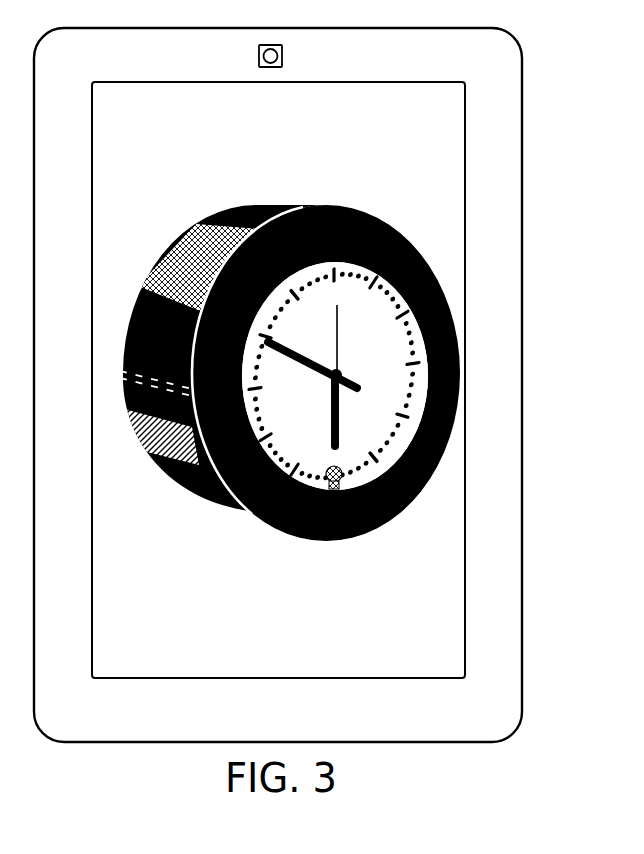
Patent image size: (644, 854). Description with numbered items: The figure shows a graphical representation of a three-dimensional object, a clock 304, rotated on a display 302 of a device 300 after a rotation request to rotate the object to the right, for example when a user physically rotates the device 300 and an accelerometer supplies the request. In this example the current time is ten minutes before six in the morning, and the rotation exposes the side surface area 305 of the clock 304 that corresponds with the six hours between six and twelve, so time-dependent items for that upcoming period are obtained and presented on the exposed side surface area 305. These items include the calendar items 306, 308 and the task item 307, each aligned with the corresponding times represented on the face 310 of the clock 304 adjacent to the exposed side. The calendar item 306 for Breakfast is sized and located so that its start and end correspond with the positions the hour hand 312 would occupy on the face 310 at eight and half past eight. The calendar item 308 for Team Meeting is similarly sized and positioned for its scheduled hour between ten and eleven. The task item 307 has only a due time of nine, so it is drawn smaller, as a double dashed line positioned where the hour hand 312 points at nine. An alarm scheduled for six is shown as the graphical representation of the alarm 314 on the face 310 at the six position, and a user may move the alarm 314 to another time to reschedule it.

The device 300 is at (533, 94).
The display 302 is at (120, 136).
The clock 304 is at (380, 207).
The side surface area 305 is at (247, 207).
The calendar item 306 is at (130, 428).
The task item 307 is at (120, 371).
The calendar item 308 is at (193, 240).
The face 310 is at (385, 344).
The hour hand 312 is at (341, 397).
The graphical representation of the alarm 314 is at (330, 471).